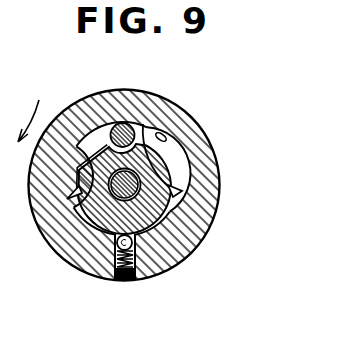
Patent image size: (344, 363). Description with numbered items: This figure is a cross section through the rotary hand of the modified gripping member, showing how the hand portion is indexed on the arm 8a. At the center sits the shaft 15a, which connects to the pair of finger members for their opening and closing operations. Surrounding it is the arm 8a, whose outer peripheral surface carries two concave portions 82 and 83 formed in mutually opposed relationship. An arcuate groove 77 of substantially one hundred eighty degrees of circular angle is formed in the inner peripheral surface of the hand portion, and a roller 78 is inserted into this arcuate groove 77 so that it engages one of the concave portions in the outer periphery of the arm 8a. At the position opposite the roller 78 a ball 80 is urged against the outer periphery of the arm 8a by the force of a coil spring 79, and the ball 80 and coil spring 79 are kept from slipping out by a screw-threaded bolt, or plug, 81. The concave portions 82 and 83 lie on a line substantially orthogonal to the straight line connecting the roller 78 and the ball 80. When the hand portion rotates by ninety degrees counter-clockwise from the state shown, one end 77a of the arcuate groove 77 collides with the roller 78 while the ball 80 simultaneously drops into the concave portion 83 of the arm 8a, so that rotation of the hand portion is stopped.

The arm 8a is at (176, 264).
The shaft 15a is at (84, 210).
The arcuate groove 77 is at (163, 135).
The end of arcuate groove 77a is at (209, 204).
The roller 78 is at (126, 127).
The coil spring 79 is at (123, 266).
The ball 80 is at (119, 247).
The plug 81 is at (131, 275).
The concave portion 82 is at (170, 186).
The concave portion 83 is at (82, 185).